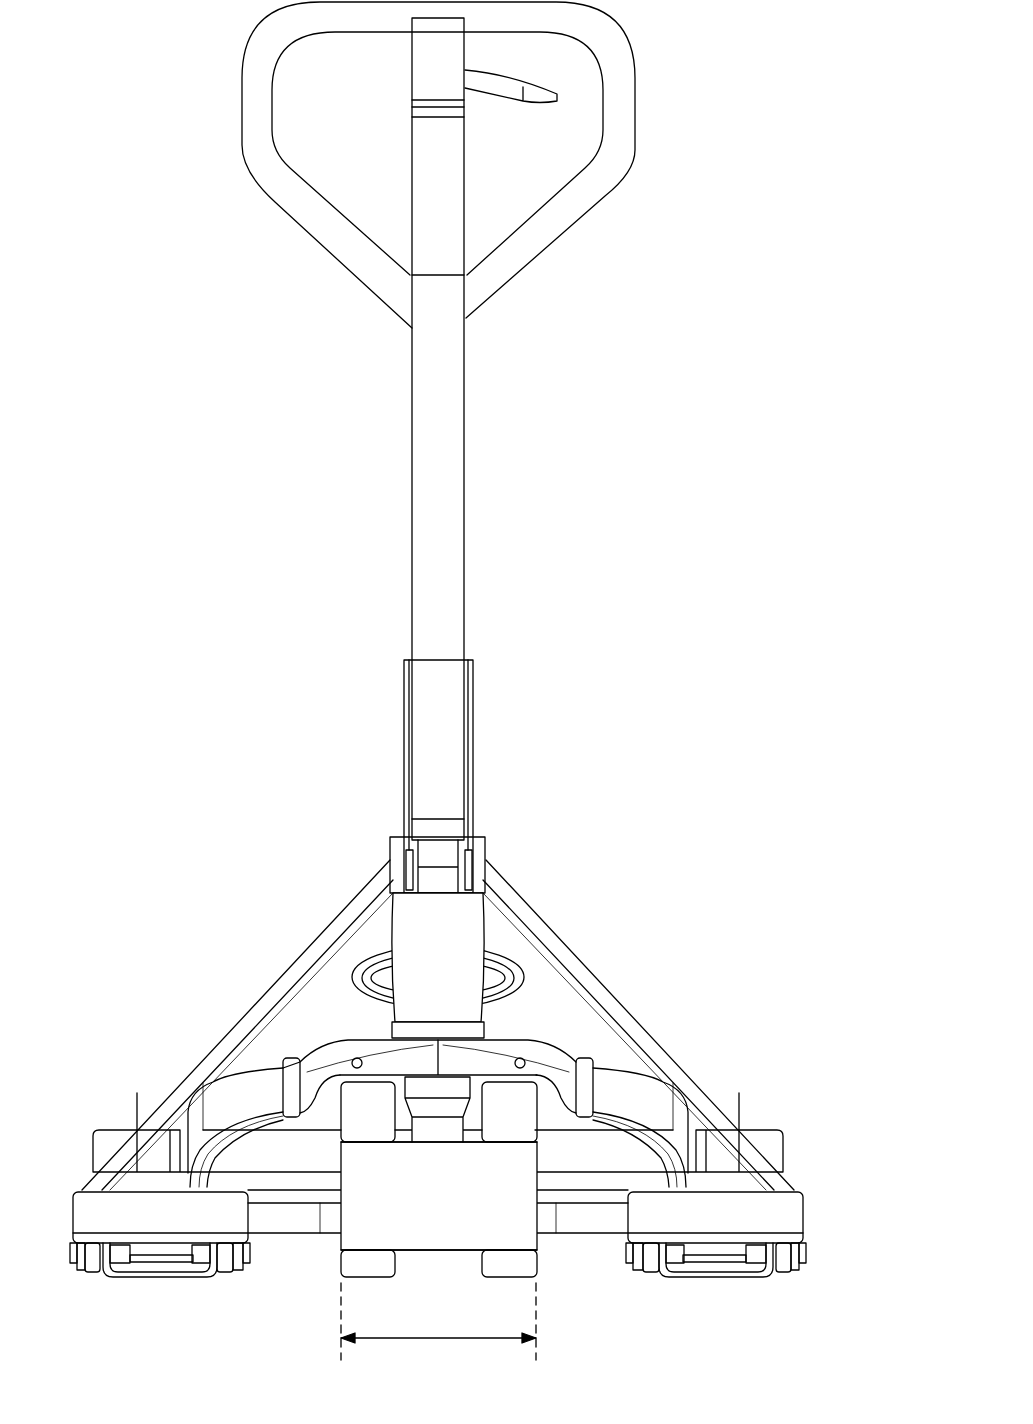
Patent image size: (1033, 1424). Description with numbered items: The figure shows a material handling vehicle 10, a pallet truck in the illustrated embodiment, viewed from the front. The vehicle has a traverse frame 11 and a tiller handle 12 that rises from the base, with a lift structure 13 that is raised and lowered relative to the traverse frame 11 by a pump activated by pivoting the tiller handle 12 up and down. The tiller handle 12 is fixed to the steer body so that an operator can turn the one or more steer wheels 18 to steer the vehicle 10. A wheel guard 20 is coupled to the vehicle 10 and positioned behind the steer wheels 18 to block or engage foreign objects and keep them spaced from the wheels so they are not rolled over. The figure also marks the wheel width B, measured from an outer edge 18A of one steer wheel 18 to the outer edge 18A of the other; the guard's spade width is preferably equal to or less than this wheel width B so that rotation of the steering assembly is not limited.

The material handling vehicle 10 is at (155, 214).
The tiller handle 12 is at (660, 78).
The lift structure 13 is at (613, 975).
The traverse frame 11 is at (550, 1057).
The wheel guard 20 is at (358, 1226).
The steer wheels 18 is at (368, 1286).
The outer edge 18A is at (340, 1260).
The wheel width B is at (440, 1340).